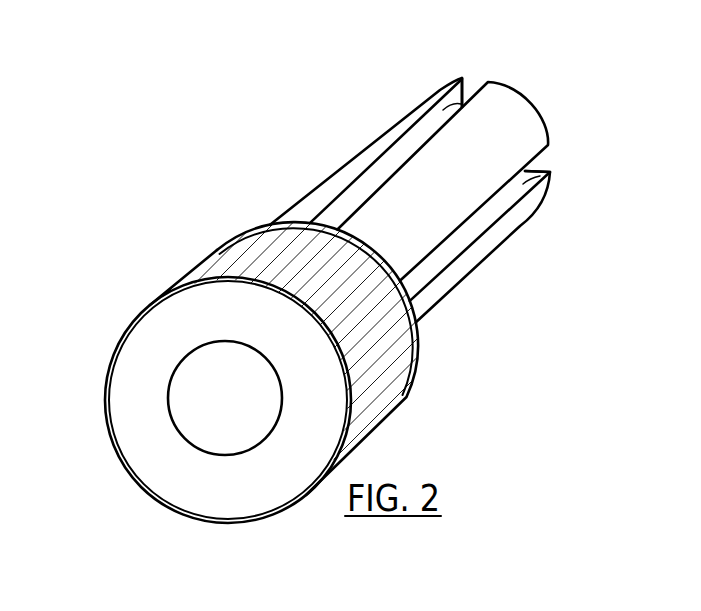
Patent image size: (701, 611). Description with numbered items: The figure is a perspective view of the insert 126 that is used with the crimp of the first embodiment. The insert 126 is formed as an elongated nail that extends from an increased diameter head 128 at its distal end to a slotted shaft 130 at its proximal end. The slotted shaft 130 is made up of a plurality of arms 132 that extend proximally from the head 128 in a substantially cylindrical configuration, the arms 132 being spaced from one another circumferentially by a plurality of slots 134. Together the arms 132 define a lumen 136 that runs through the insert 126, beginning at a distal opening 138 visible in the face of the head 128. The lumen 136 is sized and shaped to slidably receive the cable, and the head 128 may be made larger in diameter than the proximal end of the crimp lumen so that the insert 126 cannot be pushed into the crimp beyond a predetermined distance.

The insert 126 is at (98, 333).
The increased diameter head 128 is at (235, 262).
The slotted shaft 130 is at (453, 275).
The arms 132 is at (402, 197).
The slots 134 is at (462, 103).
The lumen 136 is at (205, 401).
The distal opening 138 is at (225, 455).